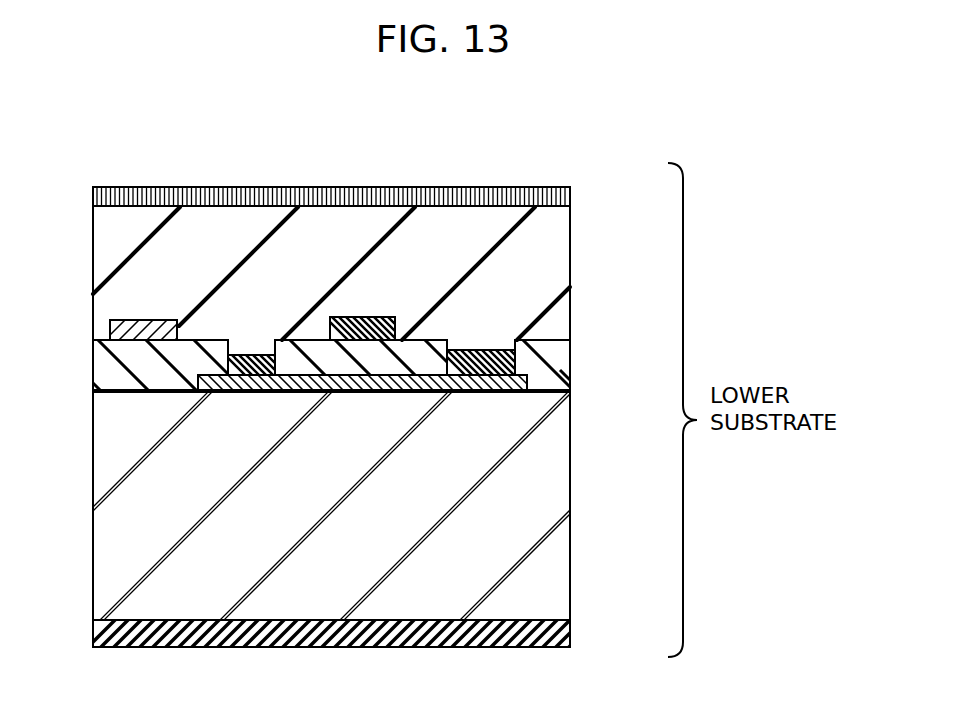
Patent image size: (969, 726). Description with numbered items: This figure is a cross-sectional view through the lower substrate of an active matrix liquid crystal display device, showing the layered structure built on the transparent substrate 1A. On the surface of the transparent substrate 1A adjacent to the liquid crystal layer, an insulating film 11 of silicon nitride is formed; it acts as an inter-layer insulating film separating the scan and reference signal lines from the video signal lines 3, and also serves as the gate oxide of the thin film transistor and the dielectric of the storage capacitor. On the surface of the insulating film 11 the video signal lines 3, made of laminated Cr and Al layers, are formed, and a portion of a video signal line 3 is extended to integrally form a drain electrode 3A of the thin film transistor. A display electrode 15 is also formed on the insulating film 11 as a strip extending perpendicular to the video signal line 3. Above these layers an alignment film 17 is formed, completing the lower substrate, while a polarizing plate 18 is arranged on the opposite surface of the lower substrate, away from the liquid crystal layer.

The transparent substrate 1A is at (110, 545).
The video signal line 3 is at (365, 316).
The drain electrode 3A is at (262, 354).
The insulating film 11 is at (548, 352).
The display electrode 15 is at (135, 319).
The alignment film 17 is at (530, 188).
The polarizing plate 18 is at (500, 646).